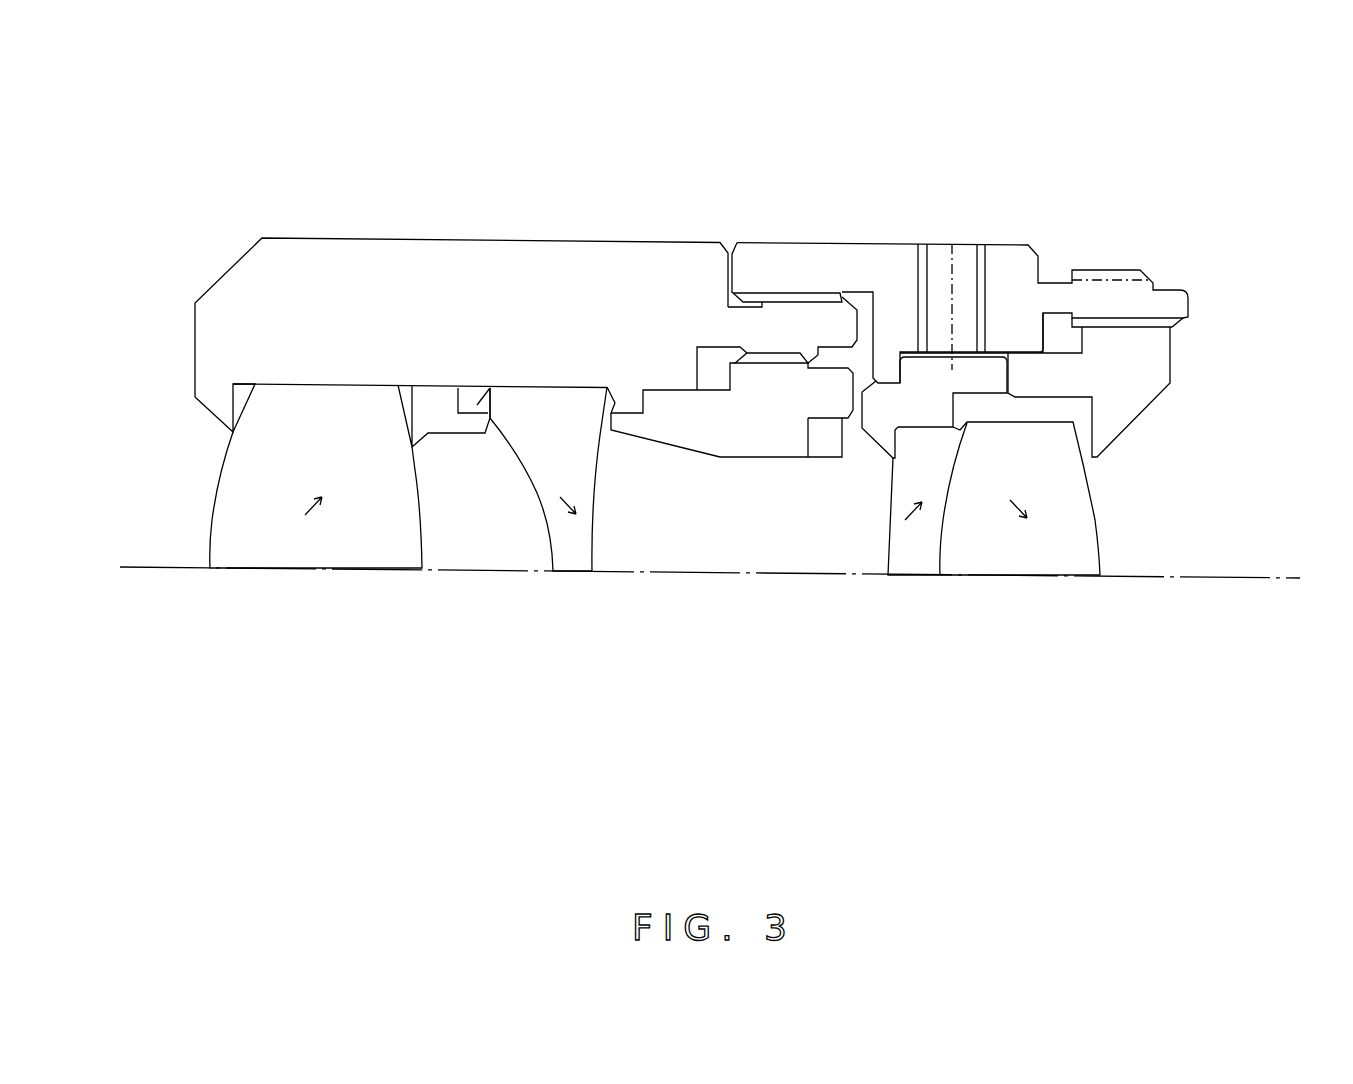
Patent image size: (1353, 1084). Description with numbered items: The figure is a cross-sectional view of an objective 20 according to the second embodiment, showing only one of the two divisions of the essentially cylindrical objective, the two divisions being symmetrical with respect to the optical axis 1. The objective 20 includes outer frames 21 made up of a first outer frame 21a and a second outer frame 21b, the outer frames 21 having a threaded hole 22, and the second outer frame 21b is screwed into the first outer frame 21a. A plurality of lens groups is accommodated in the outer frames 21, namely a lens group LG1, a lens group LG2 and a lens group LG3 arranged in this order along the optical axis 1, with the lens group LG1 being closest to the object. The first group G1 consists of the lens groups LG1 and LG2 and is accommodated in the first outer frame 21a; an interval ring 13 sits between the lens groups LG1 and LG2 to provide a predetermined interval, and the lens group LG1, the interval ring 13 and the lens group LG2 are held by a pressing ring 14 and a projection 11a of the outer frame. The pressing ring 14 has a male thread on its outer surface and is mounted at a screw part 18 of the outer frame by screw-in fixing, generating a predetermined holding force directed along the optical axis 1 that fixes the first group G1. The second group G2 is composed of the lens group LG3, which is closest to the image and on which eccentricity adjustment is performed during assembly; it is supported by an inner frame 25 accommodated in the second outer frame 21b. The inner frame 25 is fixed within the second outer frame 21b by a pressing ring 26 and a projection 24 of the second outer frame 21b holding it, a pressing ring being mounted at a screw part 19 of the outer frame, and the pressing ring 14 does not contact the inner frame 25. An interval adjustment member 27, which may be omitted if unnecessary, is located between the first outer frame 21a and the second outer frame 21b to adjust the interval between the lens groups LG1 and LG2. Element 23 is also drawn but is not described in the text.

The optical axis 1 is at (1282, 578).
The projection of the outer frame 11a is at (222, 395).
The interval ring 13 is at (452, 422).
The pressing ring 14 is at (732, 428).
The screw part 18 is at (782, 358).
The screw part 19 is at (1168, 322).
The objective 20 is at (1323, 170).
The outer frame 21 is at (893, 131).
The first outer frame 21a is at (686, 257).
The second outer frame 21b is at (848, 258).
The threaded hole 22 is at (962, 255).
The seal member 23 is at (805, 293).
The projection of the second outer frame 24 is at (878, 368).
The inner frame 25 is at (877, 427).
The pressing ring 26 is at (1123, 403).
The interval adjustment member 27 is at (736, 243).
The lens group LG1 is at (377, 552).
The lens group LG2 is at (573, 552).
The lens group LG3 is at (983, 563).
The first group G1 is at (582, 648).
The second group G2 is at (1012, 648).